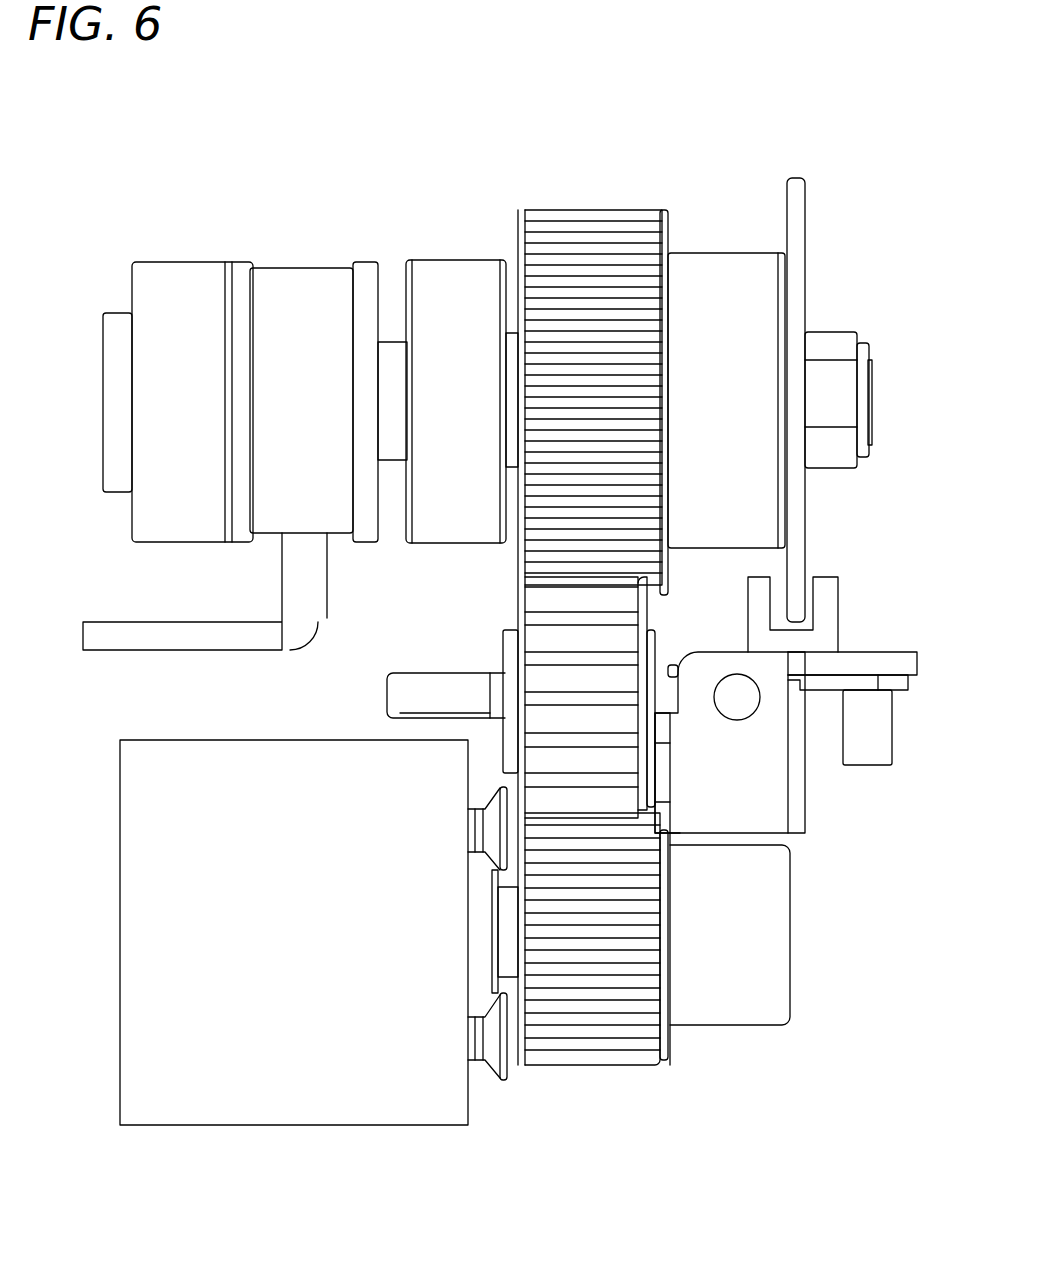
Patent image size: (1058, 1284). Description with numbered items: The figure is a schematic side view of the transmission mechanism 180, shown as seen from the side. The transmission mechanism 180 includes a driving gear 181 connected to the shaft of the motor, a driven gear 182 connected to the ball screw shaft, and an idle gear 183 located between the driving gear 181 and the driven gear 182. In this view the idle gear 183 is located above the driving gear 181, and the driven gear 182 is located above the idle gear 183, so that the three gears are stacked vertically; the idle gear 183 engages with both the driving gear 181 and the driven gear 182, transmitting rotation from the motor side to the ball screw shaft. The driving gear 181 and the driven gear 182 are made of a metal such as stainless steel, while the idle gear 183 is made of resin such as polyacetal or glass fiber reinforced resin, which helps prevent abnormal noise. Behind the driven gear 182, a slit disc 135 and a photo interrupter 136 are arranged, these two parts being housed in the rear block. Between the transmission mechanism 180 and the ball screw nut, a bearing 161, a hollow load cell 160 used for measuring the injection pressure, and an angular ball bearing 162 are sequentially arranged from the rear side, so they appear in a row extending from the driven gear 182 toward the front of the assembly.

The slit disc 135 is at (785, 183).
The photo interrupter 136 is at (838, 592).
The hollow load cell 160 is at (317, 284).
The bearing 161 is at (452, 278).
The angular ball bearing 162 is at (193, 289).
The transmission mechanism 180 is at (618, 165).
The driving gear 181 is at (578, 1057).
The driven gear 182 is at (575, 217).
The idle gear 183 is at (523, 625).